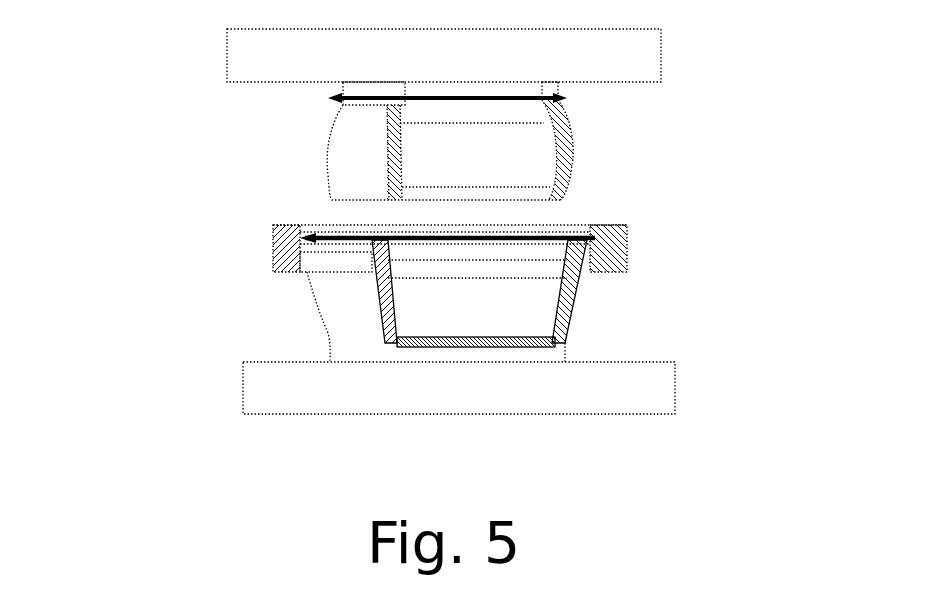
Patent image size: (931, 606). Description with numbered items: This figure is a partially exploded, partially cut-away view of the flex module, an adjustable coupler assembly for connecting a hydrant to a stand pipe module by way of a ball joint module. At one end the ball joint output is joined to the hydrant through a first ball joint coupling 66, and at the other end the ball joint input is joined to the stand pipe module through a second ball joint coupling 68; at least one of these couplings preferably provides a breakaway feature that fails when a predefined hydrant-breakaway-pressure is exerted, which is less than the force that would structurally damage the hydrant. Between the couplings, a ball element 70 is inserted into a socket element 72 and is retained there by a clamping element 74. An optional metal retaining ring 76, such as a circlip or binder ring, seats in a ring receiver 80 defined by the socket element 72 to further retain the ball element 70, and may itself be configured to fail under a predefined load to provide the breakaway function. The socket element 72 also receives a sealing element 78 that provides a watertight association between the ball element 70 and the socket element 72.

The first ball joint coupling 66 is at (240, 50).
The second ball joint coupling 68 is at (243, 392).
The ball element 70 is at (327, 155).
The socket element 72 is at (332, 300).
The clamping element 74 is at (613, 225).
The retaining ring 76 is at (565, 98).
The sealing element 78 is at (590, 265).
The ring receiver 80 is at (605, 240).